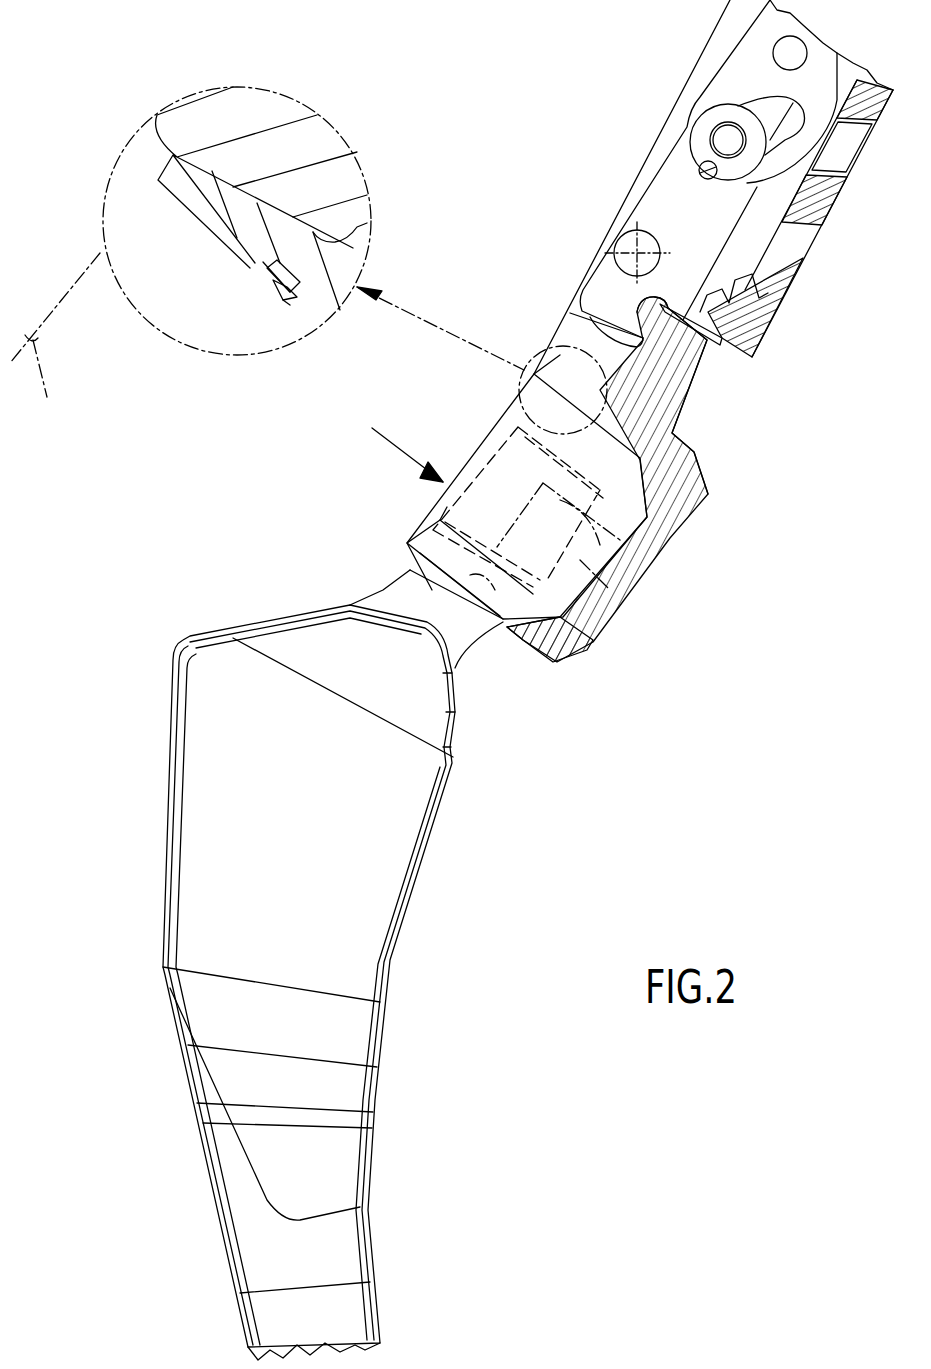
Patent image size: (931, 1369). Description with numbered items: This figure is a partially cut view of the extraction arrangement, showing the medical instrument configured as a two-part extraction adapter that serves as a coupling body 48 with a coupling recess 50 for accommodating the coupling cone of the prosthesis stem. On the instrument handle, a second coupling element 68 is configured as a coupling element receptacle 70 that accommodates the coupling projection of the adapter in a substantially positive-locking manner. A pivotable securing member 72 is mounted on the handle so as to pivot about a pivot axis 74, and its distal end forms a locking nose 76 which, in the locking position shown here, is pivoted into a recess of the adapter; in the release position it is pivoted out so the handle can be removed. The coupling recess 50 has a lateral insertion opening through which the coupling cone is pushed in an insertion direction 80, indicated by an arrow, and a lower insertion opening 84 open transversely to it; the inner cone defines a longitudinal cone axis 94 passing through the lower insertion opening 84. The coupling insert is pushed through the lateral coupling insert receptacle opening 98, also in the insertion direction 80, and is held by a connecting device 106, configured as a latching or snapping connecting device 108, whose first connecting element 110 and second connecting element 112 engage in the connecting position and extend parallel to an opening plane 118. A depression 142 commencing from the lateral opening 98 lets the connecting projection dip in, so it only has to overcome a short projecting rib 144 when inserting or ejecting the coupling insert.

The coupling body 48 is at (698, 515).
The coupling recess 50 is at (620, 613).
The second coupling element 68 is at (673, 393).
The coupling element receptacle 70 is at (697, 352).
The securing member 72 is at (663, 197).
The pivot axis 74 is at (633, 248).
The locking nose 76 is at (610, 328).
The insertion direction 80 is at (390, 445).
The lower insertion opening 84 is at (520, 628).
The longitudinal cone axis 94 is at (647, 580).
The lateral coupling insert receptacle opening 98 is at (157, 182).
The connecting device 106 is at (305, 274).
The latching or snapping connecting device 108 is at (298, 287).
The first connecting element 110 is at (285, 292).
The second connecting element 112 is at (275, 280).
The opening plane 118 is at (190, 259).
The depression 142 is at (217, 240).
The projecting rib 144 is at (268, 274).